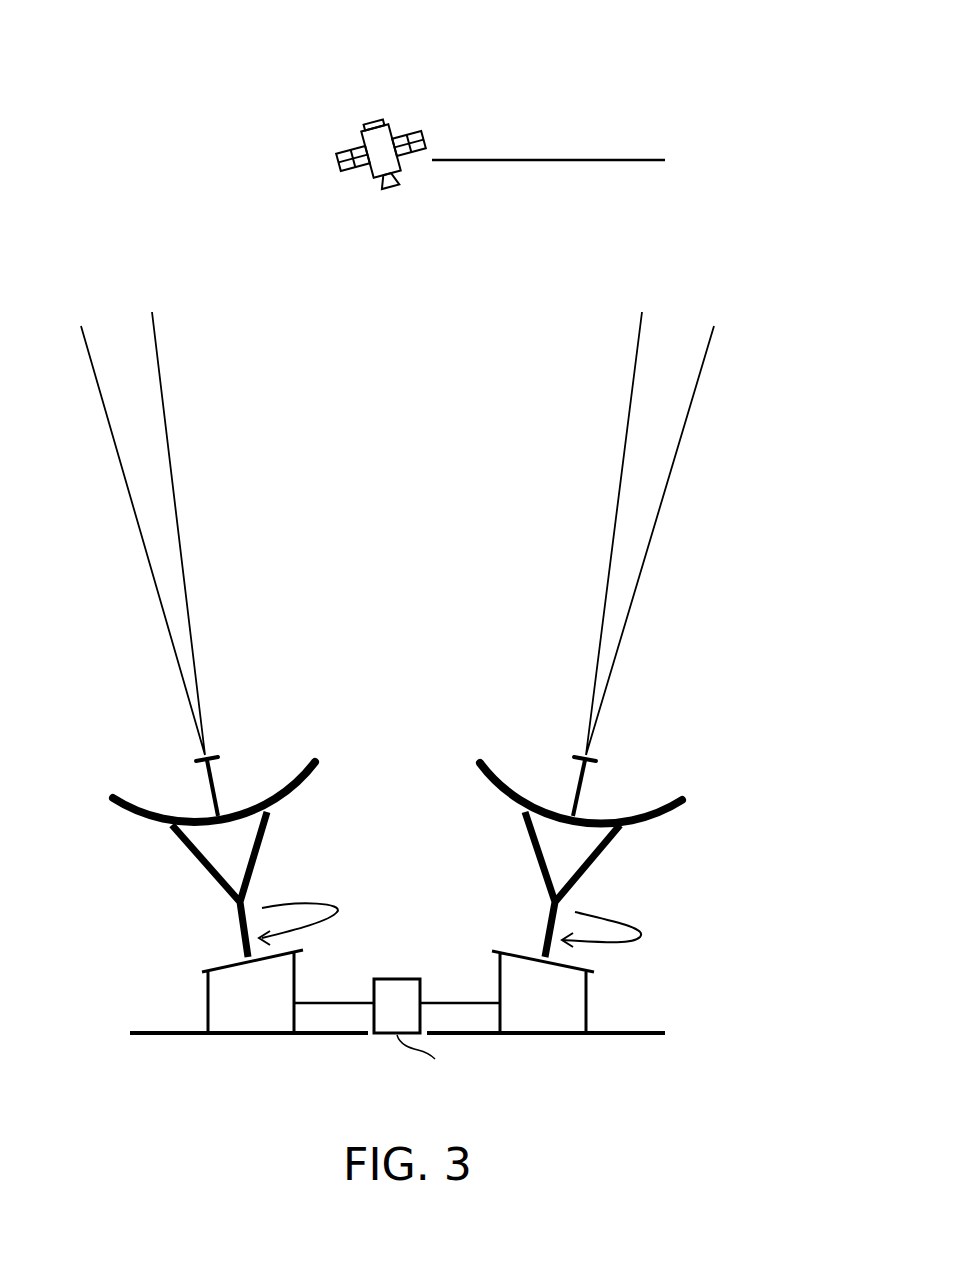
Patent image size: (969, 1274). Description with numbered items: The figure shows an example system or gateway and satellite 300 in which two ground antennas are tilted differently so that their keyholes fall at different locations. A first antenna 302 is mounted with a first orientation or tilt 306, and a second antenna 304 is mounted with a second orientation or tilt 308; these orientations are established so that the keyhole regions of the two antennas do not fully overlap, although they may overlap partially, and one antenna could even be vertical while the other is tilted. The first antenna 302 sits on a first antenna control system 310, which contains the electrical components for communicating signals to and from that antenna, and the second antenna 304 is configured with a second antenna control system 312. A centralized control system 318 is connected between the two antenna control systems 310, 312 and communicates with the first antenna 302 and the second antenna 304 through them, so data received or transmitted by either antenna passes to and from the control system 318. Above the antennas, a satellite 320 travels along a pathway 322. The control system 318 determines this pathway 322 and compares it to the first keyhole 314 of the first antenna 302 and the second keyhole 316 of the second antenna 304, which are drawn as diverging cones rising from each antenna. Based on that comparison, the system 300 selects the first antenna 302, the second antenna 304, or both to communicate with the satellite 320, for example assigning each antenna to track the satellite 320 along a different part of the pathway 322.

The system or gateway and satellite 300 is at (65, 94).
The first antenna 302 is at (210, 878).
The second antenna 304 is at (530, 838).
The first orientation or tilt 306 is at (300, 902).
The second orientation or tilt 308 is at (610, 920).
The first antenna control system 310 is at (297, 978).
The second antenna control system 312 is at (588, 987).
The first keyhole 314 is at (184, 581).
The second keyhole 316 is at (639, 581).
The control system 318 is at (405, 975).
The satellite 320 is at (412, 132).
The pathway 322 is at (593, 158).